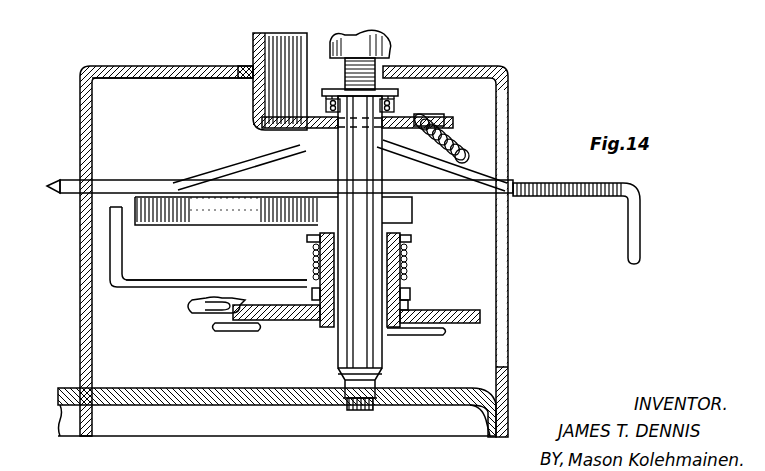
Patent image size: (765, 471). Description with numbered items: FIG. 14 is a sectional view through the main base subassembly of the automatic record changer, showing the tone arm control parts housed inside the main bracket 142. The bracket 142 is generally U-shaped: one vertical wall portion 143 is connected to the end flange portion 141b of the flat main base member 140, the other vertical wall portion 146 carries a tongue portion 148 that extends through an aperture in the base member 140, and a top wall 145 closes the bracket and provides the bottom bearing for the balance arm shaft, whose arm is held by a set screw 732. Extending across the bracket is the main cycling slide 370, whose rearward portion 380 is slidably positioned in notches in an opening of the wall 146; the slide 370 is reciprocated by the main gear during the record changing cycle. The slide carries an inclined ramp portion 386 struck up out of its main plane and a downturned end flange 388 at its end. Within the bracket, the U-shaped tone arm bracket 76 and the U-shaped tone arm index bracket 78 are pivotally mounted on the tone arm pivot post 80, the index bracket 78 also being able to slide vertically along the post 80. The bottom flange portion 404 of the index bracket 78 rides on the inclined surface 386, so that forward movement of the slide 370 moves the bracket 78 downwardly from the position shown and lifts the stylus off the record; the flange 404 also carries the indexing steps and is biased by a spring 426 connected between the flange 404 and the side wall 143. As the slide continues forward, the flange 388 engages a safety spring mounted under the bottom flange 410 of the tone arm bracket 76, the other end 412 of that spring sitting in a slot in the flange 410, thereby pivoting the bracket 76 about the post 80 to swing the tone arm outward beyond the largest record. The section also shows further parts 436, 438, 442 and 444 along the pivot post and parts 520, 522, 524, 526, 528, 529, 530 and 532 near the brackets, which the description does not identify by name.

The tone arm bracket 76 is at (278, 320).
The tone arm index bracket 78 is at (247, 55).
The tone arm pivot post 80 is at (338, 160).
The main base member 140 is at (225, 405).
The end flange portion 141b is at (486, 434).
The main bracket 142 is at (184, 66).
The vertical wall portion 143 is at (506, 372).
The top wall 145 is at (476, 72).
The vertical wall portion 146 is at (80, 138).
The tongue portion 148 is at (90, 432).
The main cycling slide 370 is at (66, 196).
The rearward portion 380 is at (64, 182).
The inclined ramp portion 386 is at (214, 168).
The downturned end flange 388 is at (628, 226).
The bottom flange portion 404 is at (262, 128).
The bottom flange 410 is at (262, 327).
The other end 412 is at (198, 300).
The spring 426 is at (464, 148).
The flange 436 is at (336, 88).
The wing nut 438 is at (378, 64).
The neck 442 is at (364, 410).
The nut 444 is at (352, 410).
The bar 520 is at (396, 334).
The hub 522 is at (404, 238).
The lower flange 524 is at (410, 300).
The bearing 526 is at (408, 254).
The collar 528 is at (424, 280).
The bracket arm 529 is at (172, 286).
The bracket 530 is at (122, 262).
The plate 532 is at (206, 226).
The set screw 732 is at (234, 78).